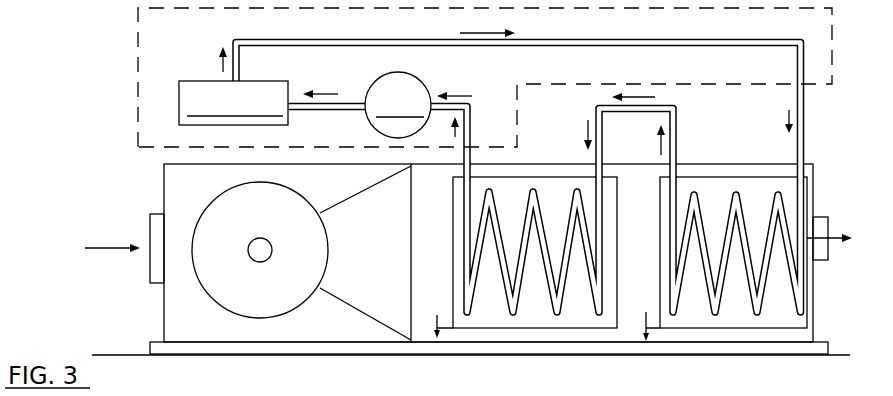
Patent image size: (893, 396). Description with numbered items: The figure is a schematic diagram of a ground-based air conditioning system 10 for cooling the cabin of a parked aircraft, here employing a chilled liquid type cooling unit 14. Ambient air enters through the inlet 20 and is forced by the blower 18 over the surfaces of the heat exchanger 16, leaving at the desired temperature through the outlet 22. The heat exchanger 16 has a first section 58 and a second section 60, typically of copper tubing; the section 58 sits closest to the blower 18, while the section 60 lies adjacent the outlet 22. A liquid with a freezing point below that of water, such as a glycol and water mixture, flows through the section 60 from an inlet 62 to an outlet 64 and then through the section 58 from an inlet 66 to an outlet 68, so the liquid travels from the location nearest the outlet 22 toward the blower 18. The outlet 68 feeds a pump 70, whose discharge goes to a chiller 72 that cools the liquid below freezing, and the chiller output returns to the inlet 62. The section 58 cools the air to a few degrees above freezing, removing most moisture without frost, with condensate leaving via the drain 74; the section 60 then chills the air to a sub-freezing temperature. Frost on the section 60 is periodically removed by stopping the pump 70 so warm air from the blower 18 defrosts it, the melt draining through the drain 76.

The ground-based air conditioning system 10 is at (158, 311).
The cooling unit 14 is at (130, 41).
The heat exchanger 16 is at (437, 265).
The blower 18 is at (225, 285).
The inlet 20 is at (152, 228).
The outlet 22 is at (826, 217).
The first section 58 is at (533, 315).
The second section 60 is at (737, 313).
The inlet 62 is at (797, 166).
The outlet 64 is at (678, 163).
The inlet 66 is at (595, 173).
The outlet 68 is at (465, 170).
The pump 70 is at (406, 88).
The chiller 72 is at (192, 80).
The drain 74 is at (435, 322).
The drain 76 is at (646, 312).